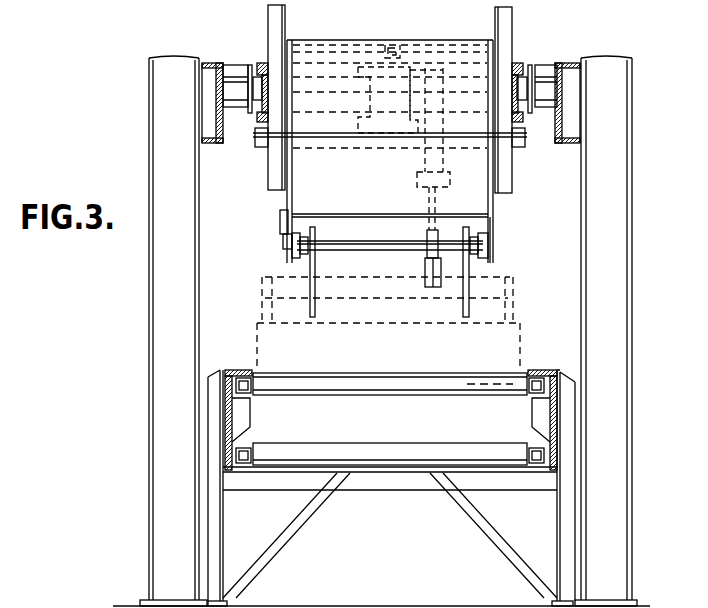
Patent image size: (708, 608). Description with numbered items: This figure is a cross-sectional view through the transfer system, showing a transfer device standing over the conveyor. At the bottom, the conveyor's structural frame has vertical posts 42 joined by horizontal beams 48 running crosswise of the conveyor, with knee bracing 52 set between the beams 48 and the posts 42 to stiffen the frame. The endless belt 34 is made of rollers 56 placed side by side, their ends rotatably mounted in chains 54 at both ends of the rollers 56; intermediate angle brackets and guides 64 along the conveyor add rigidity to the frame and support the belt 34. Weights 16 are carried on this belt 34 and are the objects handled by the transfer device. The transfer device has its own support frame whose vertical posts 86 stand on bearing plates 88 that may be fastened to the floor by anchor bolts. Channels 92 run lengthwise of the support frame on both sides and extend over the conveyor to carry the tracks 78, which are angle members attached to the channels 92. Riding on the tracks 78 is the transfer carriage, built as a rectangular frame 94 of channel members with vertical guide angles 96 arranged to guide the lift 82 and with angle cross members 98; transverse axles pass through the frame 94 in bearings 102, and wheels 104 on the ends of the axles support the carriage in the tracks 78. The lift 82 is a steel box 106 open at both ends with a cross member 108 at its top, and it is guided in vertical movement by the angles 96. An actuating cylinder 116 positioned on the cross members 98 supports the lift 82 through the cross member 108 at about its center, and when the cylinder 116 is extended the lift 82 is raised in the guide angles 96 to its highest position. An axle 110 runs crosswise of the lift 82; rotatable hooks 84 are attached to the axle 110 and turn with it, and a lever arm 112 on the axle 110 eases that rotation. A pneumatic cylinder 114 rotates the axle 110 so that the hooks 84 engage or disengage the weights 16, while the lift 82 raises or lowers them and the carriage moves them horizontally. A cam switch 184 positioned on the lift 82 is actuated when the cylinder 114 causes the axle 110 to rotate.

The weights 16 is at (515, 323).
The endless belt 34 is at (389, 366).
The vertical posts 42 is at (223, 528).
The horizontal beams 48 is at (365, 491).
The knee bracing 52 is at (279, 543).
The chains 54 is at (233, 447).
The rollers 56 is at (362, 447).
The angle brackets and guides 64 is at (247, 408).
The track 78 is at (238, 66).
The lift 82 is at (278, 209).
The hooks 84 is at (316, 304).
The vertical posts 86 is at (149, 393).
The bearing plates 88 is at (142, 596).
The channel 92 is at (215, 141).
The frame 94 is at (515, 65).
The vertical guide angles 96 is at (285, 35).
The angle cross members 98 is at (338, 148).
The bearings 102 is at (258, 70).
The wheels 104 is at (548, 66).
The box 106 is at (492, 210).
The cross member 108 is at (372, 40).
The axle 110 is at (330, 247).
The lever arm 112 is at (428, 249).
The pneumatic actuating cylinder 114 is at (414, 160).
The actuating cylinder 116 is at (358, 102).
The cam switch 184 is at (282, 228).